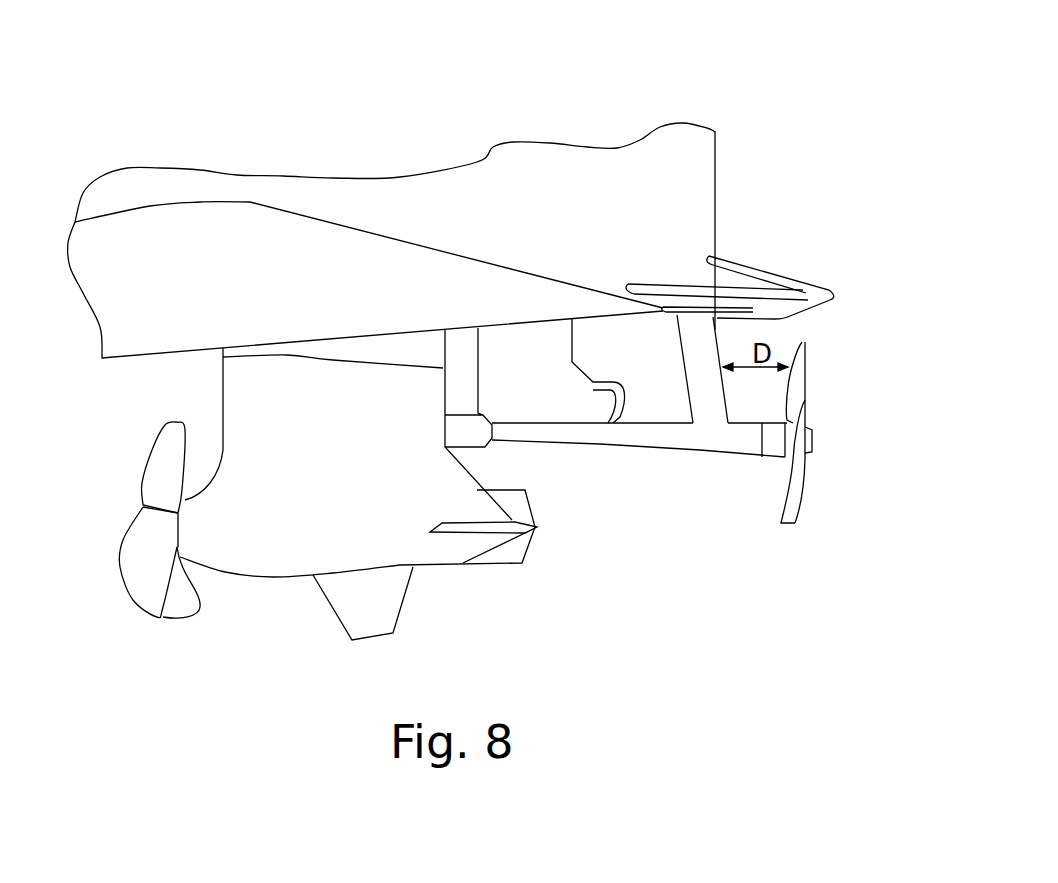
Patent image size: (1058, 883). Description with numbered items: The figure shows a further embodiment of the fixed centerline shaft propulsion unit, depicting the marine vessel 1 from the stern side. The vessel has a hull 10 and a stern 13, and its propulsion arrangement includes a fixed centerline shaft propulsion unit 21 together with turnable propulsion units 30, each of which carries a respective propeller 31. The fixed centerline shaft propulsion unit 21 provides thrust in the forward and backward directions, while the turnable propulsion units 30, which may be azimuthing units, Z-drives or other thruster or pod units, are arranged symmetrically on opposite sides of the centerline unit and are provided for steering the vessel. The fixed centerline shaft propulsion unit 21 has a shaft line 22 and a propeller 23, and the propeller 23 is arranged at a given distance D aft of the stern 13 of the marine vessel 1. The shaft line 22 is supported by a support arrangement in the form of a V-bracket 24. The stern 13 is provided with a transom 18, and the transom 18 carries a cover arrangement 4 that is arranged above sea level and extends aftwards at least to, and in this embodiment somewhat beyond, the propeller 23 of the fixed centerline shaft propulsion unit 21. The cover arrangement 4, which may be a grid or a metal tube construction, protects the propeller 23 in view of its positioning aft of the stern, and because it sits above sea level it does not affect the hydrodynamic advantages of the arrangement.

The marine vessel 1 is at (799, 125).
The cover arrangement 4 is at (826, 267).
The hull 10 is at (108, 322).
The stern 13 is at (603, 183).
The transom 18 is at (692, 221).
The fixed centerline shaft propulsion unit 21 is at (748, 492).
The shaft line 22 is at (660, 437).
The propeller 23 is at (805, 368).
The V-bracket 24 is at (708, 340).
The turnable propulsion unit 30 is at (283, 560).
The propeller 31 is at (163, 452).